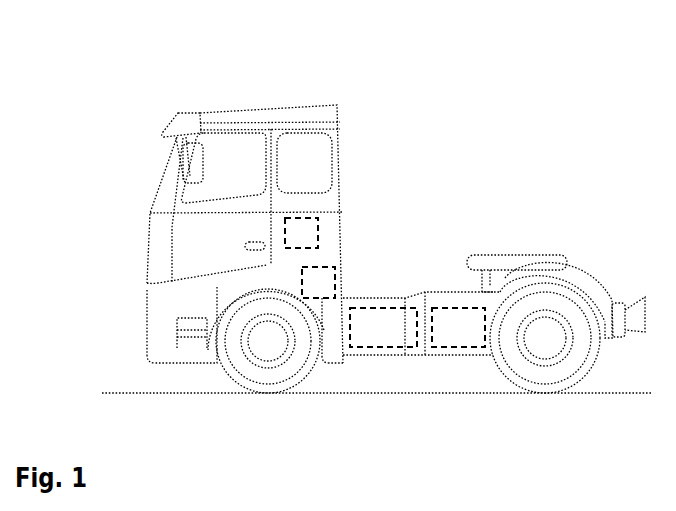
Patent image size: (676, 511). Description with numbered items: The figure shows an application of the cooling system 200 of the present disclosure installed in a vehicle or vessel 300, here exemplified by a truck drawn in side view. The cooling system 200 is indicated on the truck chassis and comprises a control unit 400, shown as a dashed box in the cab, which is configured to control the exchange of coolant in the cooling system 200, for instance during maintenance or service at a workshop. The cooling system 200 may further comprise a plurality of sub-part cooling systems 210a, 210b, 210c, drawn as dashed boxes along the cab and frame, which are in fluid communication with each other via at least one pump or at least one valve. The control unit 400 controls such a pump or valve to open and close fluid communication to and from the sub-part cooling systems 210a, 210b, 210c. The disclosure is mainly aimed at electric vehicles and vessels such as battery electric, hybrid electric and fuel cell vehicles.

The vehicle or vessel 300 is at (126, 47).
The cooling system 200 is at (452, 229).
The control unit 400 is at (319, 237).
The sub-part cooling system 210a is at (325, 283).
The sub-part cooling system 210b is at (380, 345).
The sub-part cooling system 210c is at (468, 345).